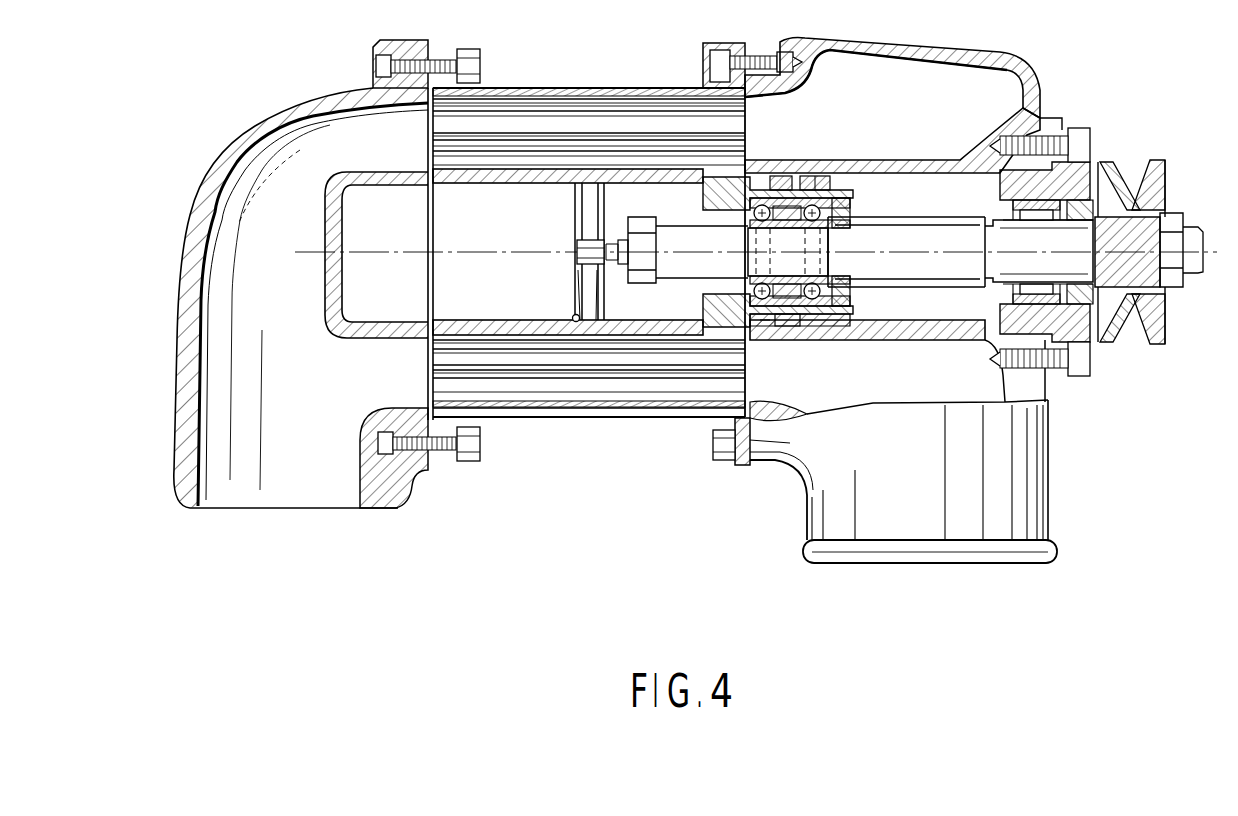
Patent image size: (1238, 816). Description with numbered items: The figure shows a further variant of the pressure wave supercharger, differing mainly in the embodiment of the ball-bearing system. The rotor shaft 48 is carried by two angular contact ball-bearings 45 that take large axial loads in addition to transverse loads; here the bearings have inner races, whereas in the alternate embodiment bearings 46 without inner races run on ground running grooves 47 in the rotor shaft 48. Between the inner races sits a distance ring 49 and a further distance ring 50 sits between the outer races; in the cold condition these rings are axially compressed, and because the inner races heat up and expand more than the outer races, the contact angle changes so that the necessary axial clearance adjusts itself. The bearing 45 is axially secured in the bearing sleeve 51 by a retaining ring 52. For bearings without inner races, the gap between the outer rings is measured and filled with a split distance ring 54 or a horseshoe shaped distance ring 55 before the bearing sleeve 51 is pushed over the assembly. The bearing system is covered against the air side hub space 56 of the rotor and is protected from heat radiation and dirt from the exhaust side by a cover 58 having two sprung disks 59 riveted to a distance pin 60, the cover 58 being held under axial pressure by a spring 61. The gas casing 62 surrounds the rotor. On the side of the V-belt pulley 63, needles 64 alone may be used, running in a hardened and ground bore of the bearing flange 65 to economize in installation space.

The angular contact ball-bearing 45 is at (760, 200).
The bearing without inner race 46 is at (760, 305).
The ground running groove 47 is at (812, 263).
The rotor shaft 48 is at (948, 258).
The distance ring 49 is at (800, 188).
The spacer sleeve 50 is at (781, 188).
The bearing sleeve 51 is at (722, 190).
The retaining ring 52 is at (850, 292).
The split distance ring 54 is at (797, 308).
The horseshoe shaped distance ring 55 is at (790, 325).
The air side hub space 56 is at (633, 208).
The cover 58 is at (590, 203).
The sprung disk 59 is at (596, 287).
The distance pin 60 is at (592, 247).
The spring 61 is at (573, 317).
The gas casing 62 is at (265, 340).
The V-belt pulley 63 is at (1165, 186).
The needles 64 is at (1070, 316).
The bearing flange 65 is at (1080, 360).